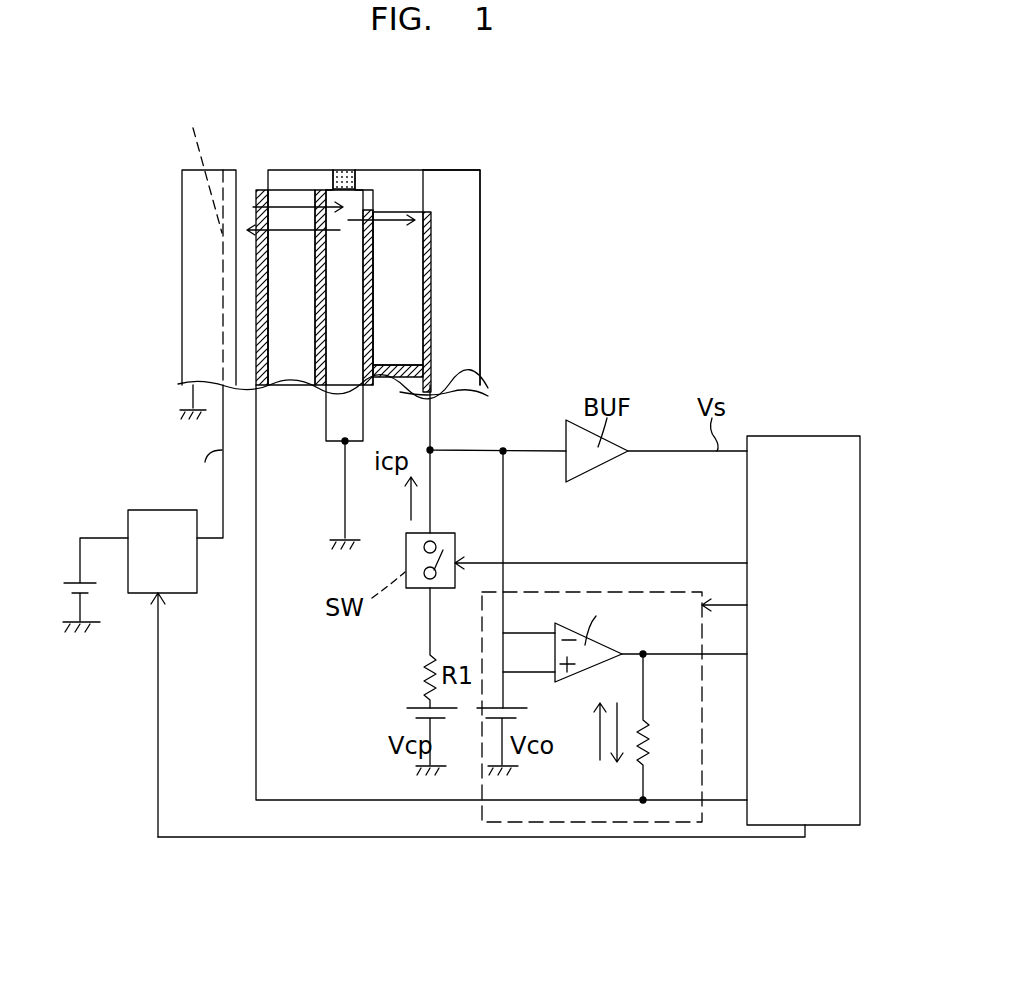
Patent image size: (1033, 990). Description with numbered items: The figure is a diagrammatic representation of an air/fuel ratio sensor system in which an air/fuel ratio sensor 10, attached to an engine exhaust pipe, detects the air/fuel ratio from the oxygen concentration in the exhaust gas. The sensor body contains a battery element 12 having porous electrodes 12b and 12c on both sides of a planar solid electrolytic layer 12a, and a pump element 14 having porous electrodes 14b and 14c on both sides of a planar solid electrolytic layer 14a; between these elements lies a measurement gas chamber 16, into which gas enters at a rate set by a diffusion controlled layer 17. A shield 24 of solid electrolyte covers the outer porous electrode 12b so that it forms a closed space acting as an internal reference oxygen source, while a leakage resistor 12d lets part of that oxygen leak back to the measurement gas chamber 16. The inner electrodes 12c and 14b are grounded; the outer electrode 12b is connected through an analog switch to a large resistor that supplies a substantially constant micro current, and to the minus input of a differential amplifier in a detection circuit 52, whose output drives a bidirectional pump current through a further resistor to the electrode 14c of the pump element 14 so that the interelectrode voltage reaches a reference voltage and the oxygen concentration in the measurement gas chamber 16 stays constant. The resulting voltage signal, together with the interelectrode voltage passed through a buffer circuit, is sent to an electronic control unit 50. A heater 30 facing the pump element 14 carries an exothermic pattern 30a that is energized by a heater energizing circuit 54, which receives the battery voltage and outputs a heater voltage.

The air/fuel ratio sensor 10 is at (534, 236).
The battery element 12 is at (509, 301).
The planar solid electrolytic layer 12a is at (402, 350).
The porous electrode 12b is at (428, 295).
The porous electrode 12c is at (375, 318).
The leakage resistor 12d is at (405, 378).
The pump element 14 is at (188, 287).
The planar solid electrolytic layer 14a is at (282, 318).
The porous electrode 14b is at (307, 262).
The porous electrode 14c is at (258, 278).
The measurement gas chamber 16 is at (340, 353).
The diffusion controlled layer 17 is at (343, 170).
The shield 24 is at (453, 172).
The heater 30 is at (163, 207).
The exothermic pattern 30a is at (204, 166).
The electronic control unit 50 is at (810, 436).
The detection circuit 52 is at (546, 594).
The heater energizing circuit 54 is at (137, 510).